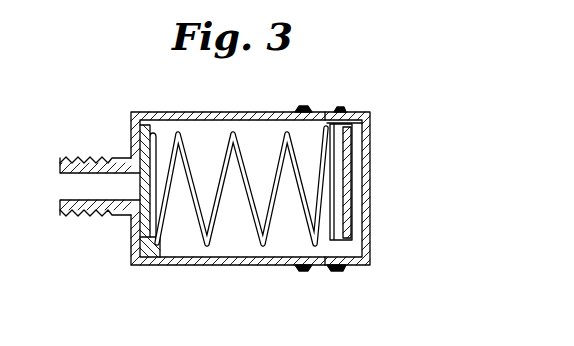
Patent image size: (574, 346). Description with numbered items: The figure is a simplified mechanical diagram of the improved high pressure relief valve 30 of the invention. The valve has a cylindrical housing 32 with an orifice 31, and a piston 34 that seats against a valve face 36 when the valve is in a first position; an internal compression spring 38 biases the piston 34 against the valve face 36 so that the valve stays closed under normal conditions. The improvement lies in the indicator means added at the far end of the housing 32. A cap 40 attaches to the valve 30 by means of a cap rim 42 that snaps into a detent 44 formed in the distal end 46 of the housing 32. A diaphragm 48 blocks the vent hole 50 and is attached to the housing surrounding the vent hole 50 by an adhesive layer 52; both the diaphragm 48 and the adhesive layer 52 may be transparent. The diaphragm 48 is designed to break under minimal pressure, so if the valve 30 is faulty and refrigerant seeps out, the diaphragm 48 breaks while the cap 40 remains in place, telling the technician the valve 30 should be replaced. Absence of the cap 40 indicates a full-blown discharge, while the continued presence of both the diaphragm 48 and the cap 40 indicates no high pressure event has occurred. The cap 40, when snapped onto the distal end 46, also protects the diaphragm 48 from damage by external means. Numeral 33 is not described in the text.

The high pressure relief valve 30 is at (171, 94).
The orifice 31 is at (58, 185).
The cylindrical housing 32 is at (233, 112).
The threaded nipple 33 is at (97, 216).
The piston 34 is at (140, 150).
The valve face 36 is at (147, 236).
The internal compression spring 38 is at (270, 220).
The cap 40 is at (365, 127).
The cap rim 42 is at (299, 108).
The detent 44 is at (329, 110).
The distal end 46 is at (330, 270).
The diaphragm 48 is at (344, 160).
The vent hole 50 is at (334, 190).
The adhesive layer 52 is at (365, 122).